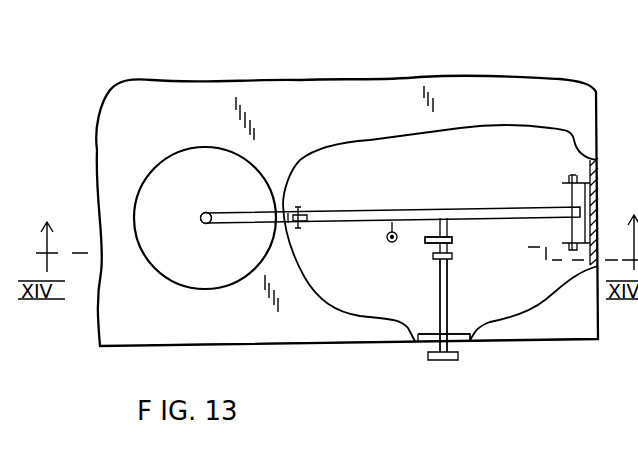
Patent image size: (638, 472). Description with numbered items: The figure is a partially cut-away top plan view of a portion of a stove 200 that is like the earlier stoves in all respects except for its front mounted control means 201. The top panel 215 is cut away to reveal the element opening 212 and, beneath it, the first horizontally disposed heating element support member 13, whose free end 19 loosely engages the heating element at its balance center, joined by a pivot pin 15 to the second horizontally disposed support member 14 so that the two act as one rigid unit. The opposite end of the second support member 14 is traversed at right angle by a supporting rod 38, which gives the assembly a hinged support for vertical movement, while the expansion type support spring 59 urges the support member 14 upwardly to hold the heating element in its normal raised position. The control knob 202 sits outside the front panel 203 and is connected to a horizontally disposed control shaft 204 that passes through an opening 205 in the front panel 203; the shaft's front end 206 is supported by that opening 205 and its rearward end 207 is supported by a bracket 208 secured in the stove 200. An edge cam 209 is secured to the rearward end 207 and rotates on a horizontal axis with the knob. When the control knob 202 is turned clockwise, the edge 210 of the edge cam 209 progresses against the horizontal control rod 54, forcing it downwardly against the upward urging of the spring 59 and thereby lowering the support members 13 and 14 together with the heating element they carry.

The stove 200 is at (118, 374).
The top panel 215 is at (582, 330).
The element opening 212 is at (189, 152).
The second horizontally disposed support member 14 is at (413, 208).
The first horizontally disposed heating element support member 13 is at (240, 212).
The free end 19 is at (202, 224).
The pivot pin 15 is at (298, 206).
The support spring 59 is at (386, 236).
The supporting rod 38 is at (562, 187).
The horizontal control rod 54 is at (452, 233).
The edge 210 is at (452, 254).
The bracket 208 is at (452, 258).
The edge cam 209 is at (430, 244).
The rearward end 207 is at (438, 272).
The control shaft 204 is at (448, 298).
The front end 206 is at (440, 318).
The control knob 202 is at (448, 361).
The opening 205 is at (425, 342).
The front panel 203 is at (345, 344).
The control means 201 is at (484, 348).